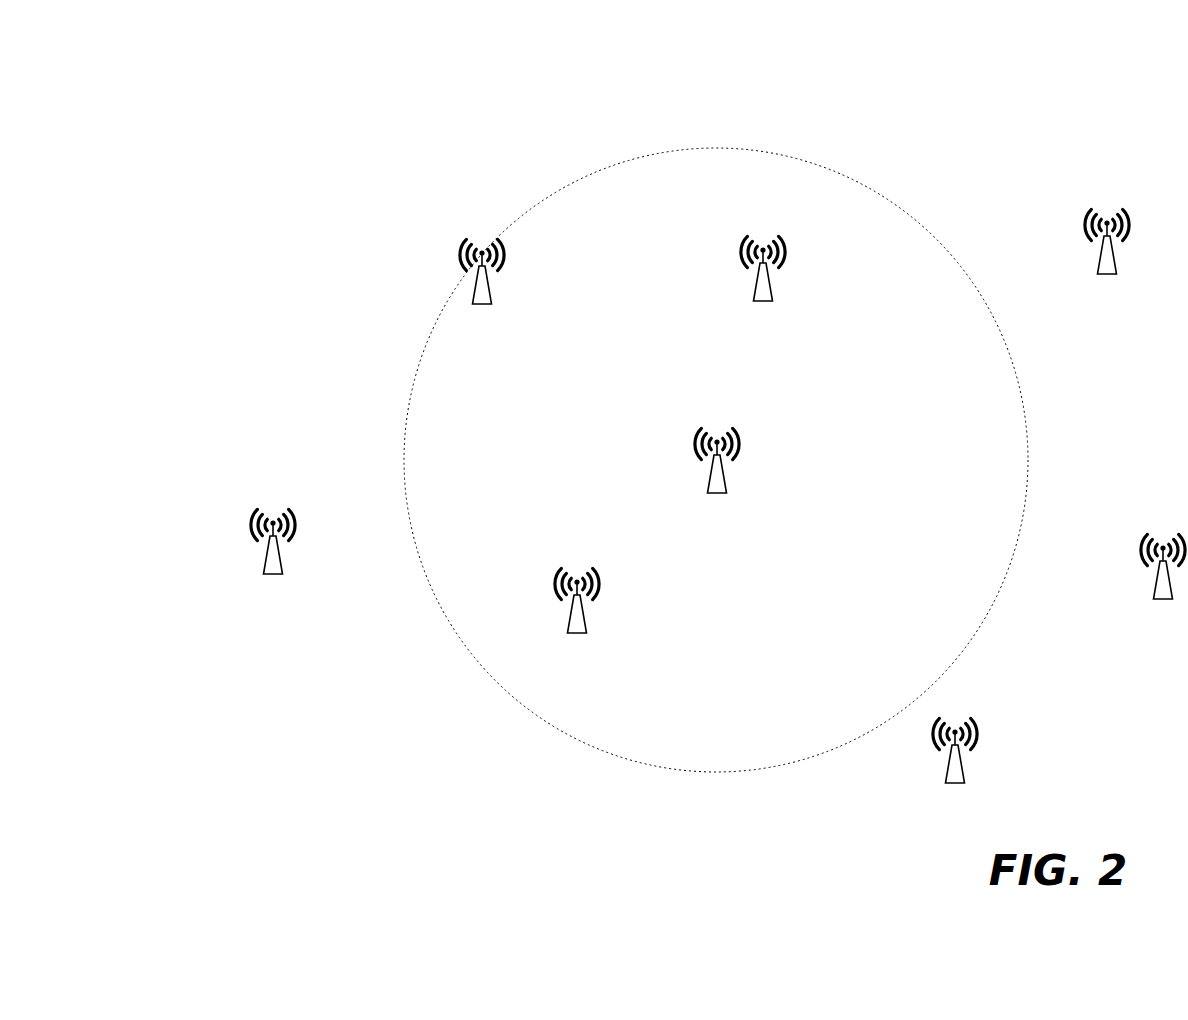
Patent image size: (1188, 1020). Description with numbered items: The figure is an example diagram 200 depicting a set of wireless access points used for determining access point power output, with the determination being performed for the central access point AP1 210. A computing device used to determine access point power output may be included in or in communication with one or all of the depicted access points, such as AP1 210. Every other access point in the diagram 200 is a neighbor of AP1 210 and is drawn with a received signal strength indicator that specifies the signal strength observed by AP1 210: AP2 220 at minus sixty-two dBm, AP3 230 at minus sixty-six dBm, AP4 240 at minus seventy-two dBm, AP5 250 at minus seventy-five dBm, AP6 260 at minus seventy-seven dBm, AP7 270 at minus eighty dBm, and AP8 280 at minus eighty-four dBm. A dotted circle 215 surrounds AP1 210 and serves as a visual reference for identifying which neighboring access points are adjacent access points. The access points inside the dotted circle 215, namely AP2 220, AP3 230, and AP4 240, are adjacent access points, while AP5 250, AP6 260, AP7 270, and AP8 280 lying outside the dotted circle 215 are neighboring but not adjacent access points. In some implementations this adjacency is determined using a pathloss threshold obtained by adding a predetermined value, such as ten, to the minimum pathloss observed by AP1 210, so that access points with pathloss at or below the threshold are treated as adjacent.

The example diagram 200 is at (160, 92).
The AP1 210 is at (688, 460).
The dotted circle 215 is at (713, 147).
The AP2 220 is at (548, 597).
The AP3 230 is at (733, 265).
The AP4 240 is at (450, 272).
The AP5 250 is at (922, 748).
The AP6 260 is at (1130, 565).
The AP7 270 is at (1072, 240).
The AP8 280 is at (240, 540).